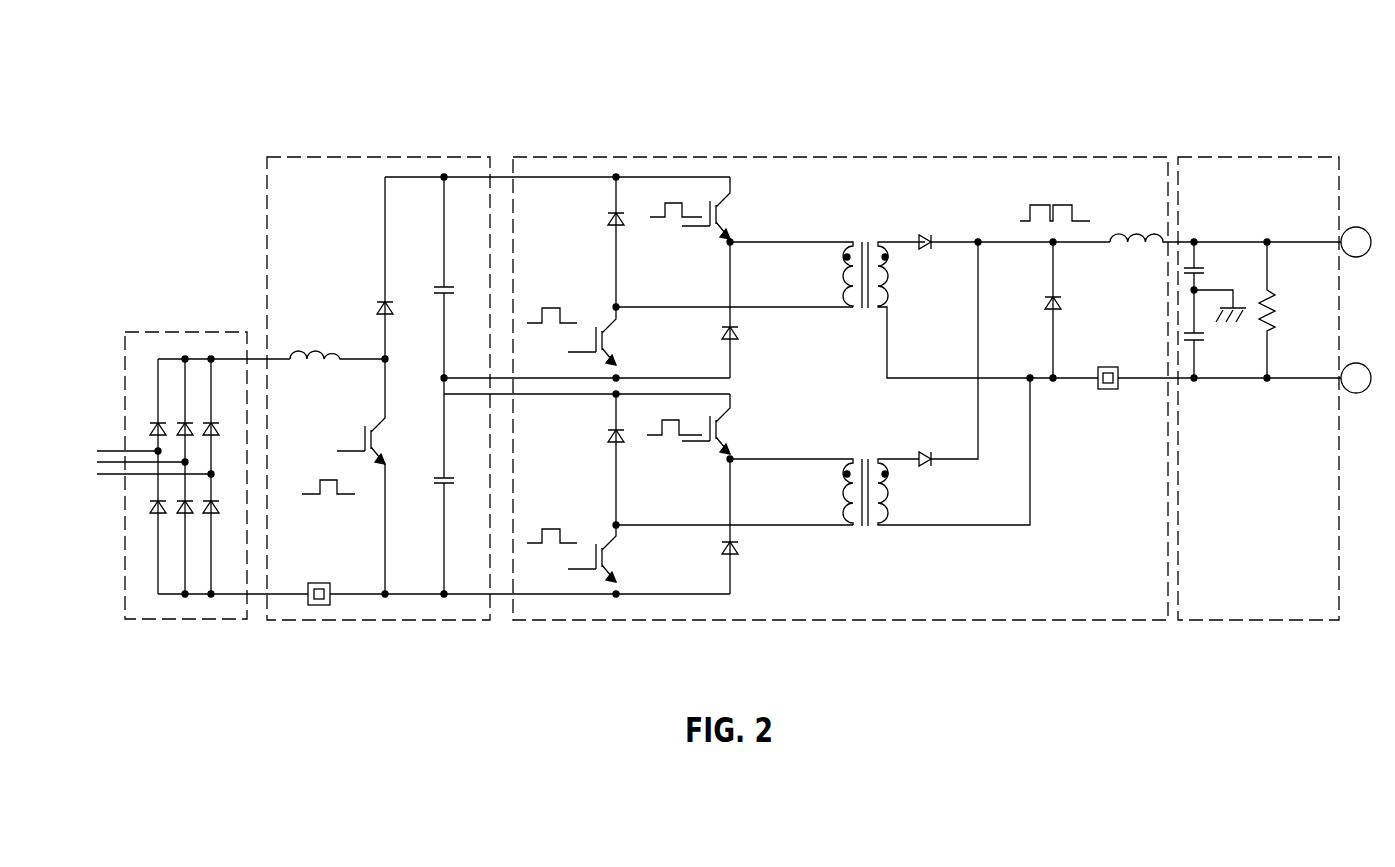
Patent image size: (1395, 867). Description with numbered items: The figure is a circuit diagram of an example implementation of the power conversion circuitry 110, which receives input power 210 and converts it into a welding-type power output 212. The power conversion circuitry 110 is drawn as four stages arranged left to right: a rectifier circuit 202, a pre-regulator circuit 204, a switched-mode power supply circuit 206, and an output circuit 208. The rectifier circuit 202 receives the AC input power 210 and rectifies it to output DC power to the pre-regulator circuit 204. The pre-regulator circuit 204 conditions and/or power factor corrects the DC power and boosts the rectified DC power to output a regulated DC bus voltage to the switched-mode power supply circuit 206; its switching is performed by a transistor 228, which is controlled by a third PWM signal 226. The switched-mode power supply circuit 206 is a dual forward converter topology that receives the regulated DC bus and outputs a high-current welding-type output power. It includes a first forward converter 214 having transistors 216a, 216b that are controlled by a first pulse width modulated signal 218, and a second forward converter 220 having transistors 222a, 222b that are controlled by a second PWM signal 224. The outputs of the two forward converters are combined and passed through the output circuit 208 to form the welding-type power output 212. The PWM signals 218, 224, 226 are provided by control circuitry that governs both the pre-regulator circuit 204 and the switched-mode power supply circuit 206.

The power conversion circuitry 110 is at (183, 72).
The rectifier circuit 202 is at (195, 332).
The pre-regulator circuit 204 is at (340, 157).
The switched-mode power supply circuit 206 is at (587, 157).
The output circuit 208 is at (1254, 157).
The input power 210 is at (129, 462).
The welding-type power output 212 is at (1392, 327).
The first forward converter 214 is at (912, 233).
The transistor 216a is at (723, 198).
The transistor 216b is at (608, 320).
The first pulse width modulated (PWM) signal 218 is at (553, 308).
The second forward converter 220 is at (965, 533).
The transistor 222a is at (723, 414).
The transistor 222b is at (608, 540).
The second PWM signal 224 is at (647, 432).
The third PWM signal 226 is at (353, 497).
The transistor 228 is at (384, 420).